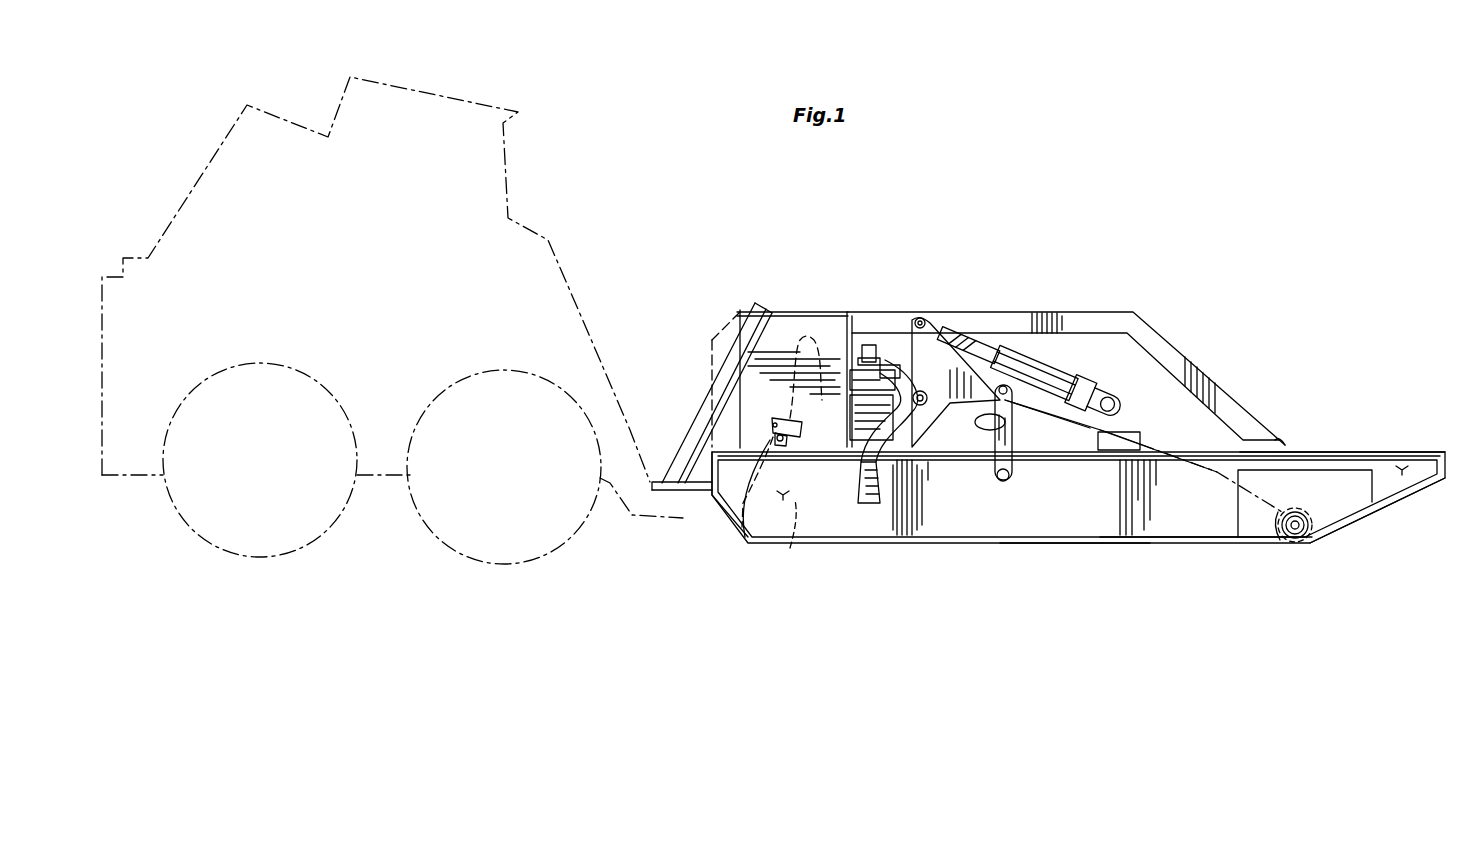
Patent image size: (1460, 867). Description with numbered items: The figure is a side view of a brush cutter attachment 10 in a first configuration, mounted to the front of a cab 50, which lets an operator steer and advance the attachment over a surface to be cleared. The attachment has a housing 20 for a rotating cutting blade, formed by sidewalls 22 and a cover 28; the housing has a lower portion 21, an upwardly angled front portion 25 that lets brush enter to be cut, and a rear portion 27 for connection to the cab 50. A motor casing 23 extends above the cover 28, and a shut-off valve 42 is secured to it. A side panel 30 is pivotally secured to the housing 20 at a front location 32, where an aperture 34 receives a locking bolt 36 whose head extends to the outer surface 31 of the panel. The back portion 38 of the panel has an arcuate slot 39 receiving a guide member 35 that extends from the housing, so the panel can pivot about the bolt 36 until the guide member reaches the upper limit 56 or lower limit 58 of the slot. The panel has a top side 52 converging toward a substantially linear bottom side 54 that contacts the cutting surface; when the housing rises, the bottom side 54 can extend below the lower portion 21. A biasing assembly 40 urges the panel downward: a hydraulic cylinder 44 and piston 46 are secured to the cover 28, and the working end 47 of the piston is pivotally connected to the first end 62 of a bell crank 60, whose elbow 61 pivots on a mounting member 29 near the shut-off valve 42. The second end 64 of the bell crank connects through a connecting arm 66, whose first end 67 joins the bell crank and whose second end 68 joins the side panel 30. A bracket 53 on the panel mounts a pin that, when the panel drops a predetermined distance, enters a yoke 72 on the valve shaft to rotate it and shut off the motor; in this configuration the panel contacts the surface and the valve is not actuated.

The brush cutter attachment 10 is at (1166, 318).
The housing 20 is at (1335, 452).
The lower portion 21 is at (1215, 545).
The sidewalls 22 is at (1403, 474).
The motor casing 23 is at (770, 335).
The front portion 25 is at (1370, 517).
The rear portion 27 is at (715, 503).
The cover 28 is at (1297, 450).
The mounting member 29 is at (947, 423).
The side panel 30 is at (931, 493).
The outer surface 31 is at (792, 548).
The front location 32 is at (1272, 527).
The aperture 34 is at (1295, 532).
The guide member 35 is at (772, 425).
The locking bolt 36 is at (1310, 513).
The back portion 38 is at (722, 438).
The arcuate slot 39 is at (827, 342).
The biasing assembly 40 is at (1050, 345).
The shut-off valve 42 is at (921, 318).
The cylinder 44 is at (1065, 345).
The piston 46 is at (984, 335).
The working end 47 is at (963, 333).
The cab 50 is at (262, 92).
The top side 52 is at (880, 340).
The bracket 53 is at (858, 470).
The bottom side 54 is at (1100, 543).
The upper limit 56 is at (808, 337).
The lower limit 58 is at (745, 537).
The bell crank 60 is at (975, 397).
The elbow 61 is at (893, 527).
The first end 62 is at (936, 320).
The second end 64 is at (1105, 385).
The connecting arm 66 is at (1110, 390).
The first end 67 is at (1158, 451).
The second end 68 is at (1010, 480).
The yoke 72 is at (845, 342).